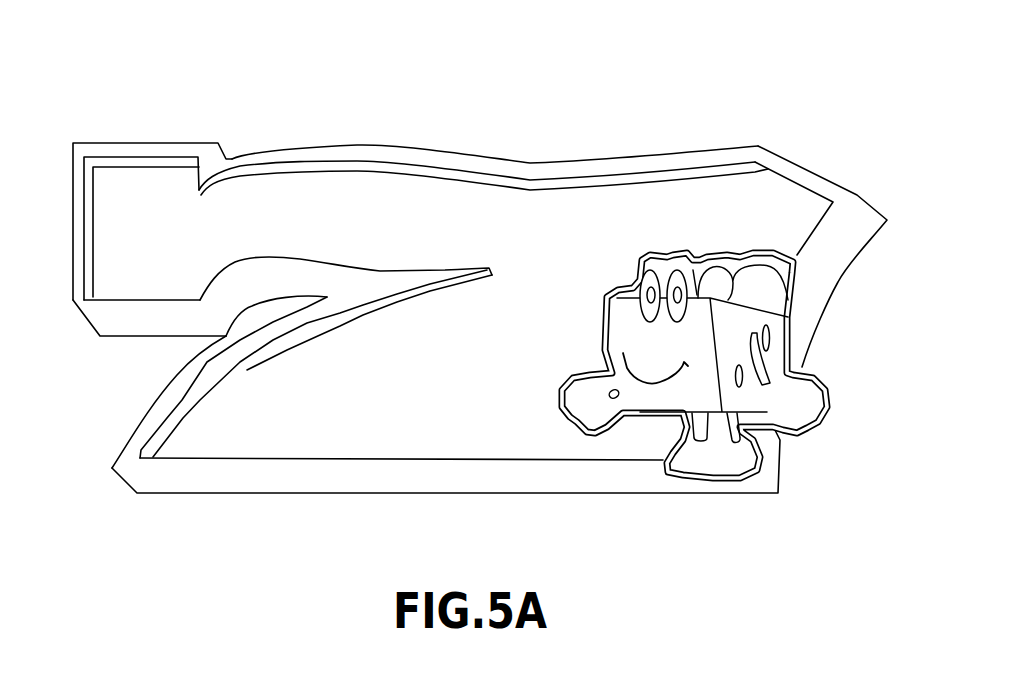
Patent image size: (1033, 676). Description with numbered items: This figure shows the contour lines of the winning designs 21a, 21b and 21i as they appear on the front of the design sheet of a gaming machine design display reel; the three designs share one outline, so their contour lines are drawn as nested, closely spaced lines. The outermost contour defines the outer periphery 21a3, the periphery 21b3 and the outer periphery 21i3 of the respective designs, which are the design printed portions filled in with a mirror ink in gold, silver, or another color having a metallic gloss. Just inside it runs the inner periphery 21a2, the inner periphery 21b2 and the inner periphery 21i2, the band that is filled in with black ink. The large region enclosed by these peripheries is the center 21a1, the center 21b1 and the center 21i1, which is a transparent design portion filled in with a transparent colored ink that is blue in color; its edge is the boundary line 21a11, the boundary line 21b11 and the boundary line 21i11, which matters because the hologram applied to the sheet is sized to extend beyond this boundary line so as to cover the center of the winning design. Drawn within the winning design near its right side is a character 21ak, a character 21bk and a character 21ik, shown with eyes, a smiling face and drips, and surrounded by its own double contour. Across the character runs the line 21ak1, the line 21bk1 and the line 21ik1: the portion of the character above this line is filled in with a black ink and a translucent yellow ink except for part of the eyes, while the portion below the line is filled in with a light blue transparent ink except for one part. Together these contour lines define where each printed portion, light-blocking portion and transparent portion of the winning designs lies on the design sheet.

The winning design 21a is at (485, 317).
The winning design 21b is at (485, 317).
The winning design 21i is at (524, 154).
The center 21a1 is at (446, 486).
The center 21b1 is at (446, 486).
The center 21i1 is at (371, 410).
The inner periphery 21a2 is at (483, 124).
The inner periphery 21b2 is at (483, 124).
The inner periphery 21i2 is at (403, 167).
The outer periphery 21a3 is at (153, 184).
The periphery 21b3 is at (153, 184).
The outer periphery 21i3 is at (252, 158).
The boundary line 21a11 is at (766, 212).
The boundary line 21b11 is at (766, 212).
The boundary line 21i11 is at (645, 192).
The character 21ak is at (738, 440).
The character 21bk is at (738, 440).
The character 21ik is at (807, 437).
The line 21ak1 is at (761, 353).
The line 21bk1 is at (761, 353).
The line 21ik1 is at (760, 300).